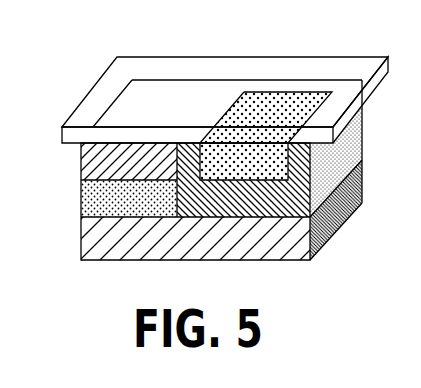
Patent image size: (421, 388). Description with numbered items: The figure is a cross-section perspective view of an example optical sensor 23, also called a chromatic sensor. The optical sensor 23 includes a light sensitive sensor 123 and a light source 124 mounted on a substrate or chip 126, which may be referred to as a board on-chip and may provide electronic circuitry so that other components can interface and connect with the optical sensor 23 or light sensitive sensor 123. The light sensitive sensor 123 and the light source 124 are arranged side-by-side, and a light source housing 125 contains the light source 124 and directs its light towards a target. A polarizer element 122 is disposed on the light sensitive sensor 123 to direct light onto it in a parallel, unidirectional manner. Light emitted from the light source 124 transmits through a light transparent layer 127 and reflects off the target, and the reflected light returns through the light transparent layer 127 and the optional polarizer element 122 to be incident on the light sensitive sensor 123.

The optical sensor 23 is at (78, 107).
The polarizer element 122 is at (147, 100).
The light sensitive sensor 123 is at (80, 205).
The light source 124 is at (292, 97).
The light source housing 125 is at (358, 135).
The substrate or chip 126 is at (340, 208).
The light transparent layer 127 is at (240, 65).